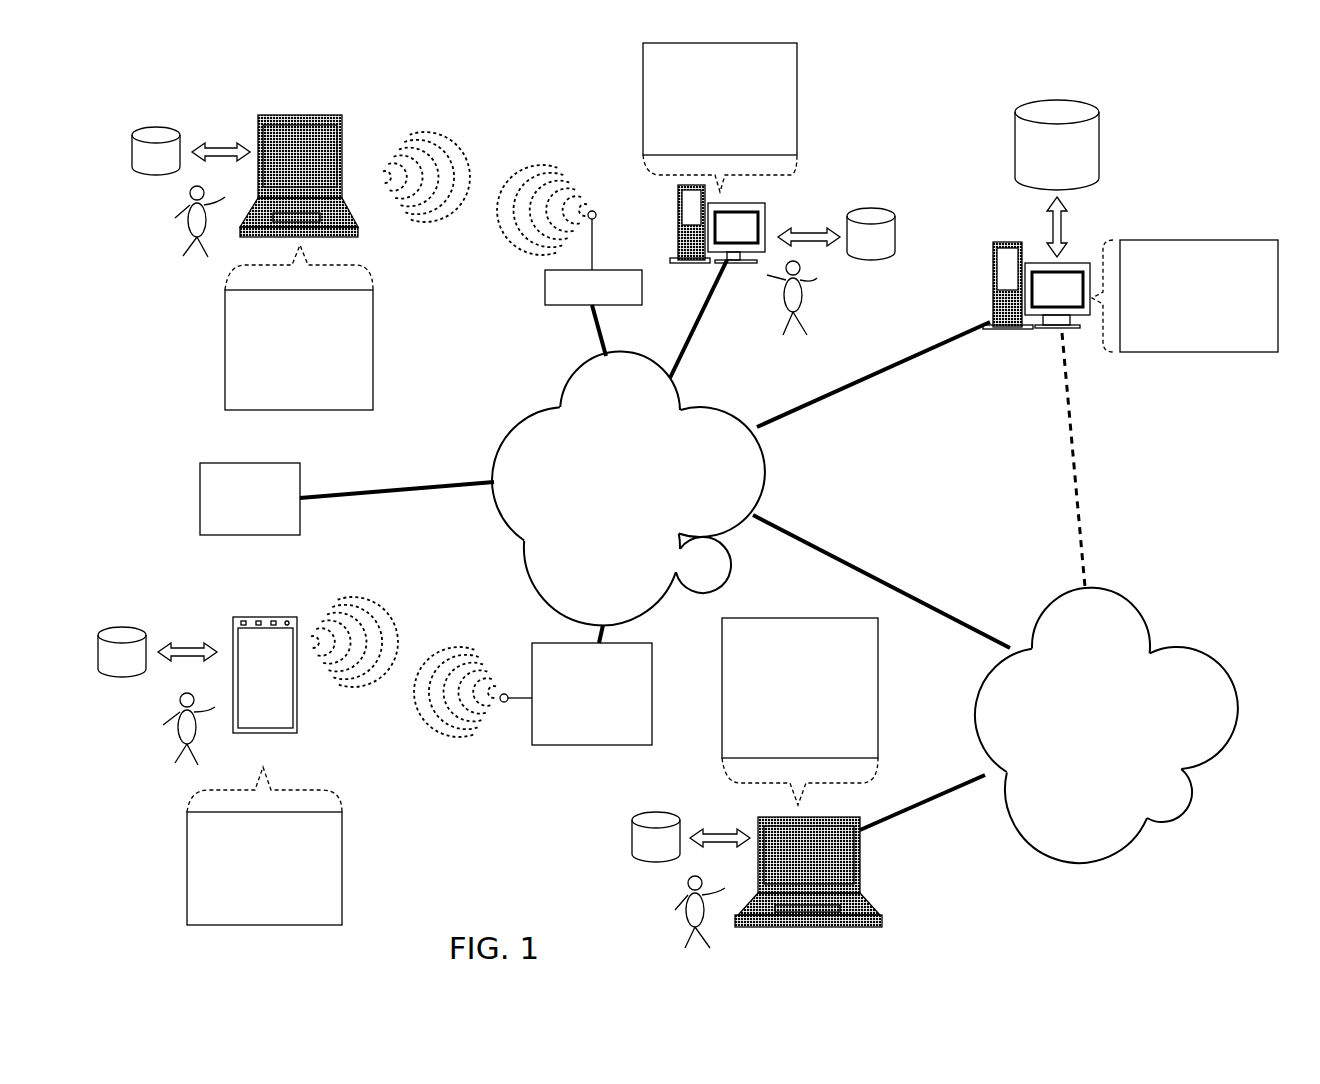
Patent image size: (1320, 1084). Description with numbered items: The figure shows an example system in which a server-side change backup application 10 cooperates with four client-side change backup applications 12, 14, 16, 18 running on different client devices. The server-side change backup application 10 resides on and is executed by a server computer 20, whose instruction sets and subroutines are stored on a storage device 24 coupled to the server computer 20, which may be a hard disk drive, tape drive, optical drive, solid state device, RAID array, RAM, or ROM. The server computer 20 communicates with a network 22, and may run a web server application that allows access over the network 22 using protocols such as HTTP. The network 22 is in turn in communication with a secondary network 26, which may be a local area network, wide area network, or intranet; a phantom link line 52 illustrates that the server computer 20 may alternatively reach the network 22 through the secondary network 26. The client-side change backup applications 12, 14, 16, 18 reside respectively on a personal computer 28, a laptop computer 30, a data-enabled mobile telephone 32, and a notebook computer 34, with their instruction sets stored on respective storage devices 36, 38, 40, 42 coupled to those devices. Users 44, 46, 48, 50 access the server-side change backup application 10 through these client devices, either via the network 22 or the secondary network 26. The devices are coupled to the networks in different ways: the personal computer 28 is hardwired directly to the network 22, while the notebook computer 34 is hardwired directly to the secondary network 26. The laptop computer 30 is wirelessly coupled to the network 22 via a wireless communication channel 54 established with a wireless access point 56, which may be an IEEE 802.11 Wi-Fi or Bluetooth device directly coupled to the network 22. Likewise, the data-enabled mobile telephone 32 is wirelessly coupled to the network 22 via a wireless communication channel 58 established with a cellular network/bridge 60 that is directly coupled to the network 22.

The server-side change backup application 10 is at (1278, 282).
The client-side change backup application 12 is at (798, 127).
The client-side change backup application 14 is at (373, 322).
The client-side change backup application 16 is at (343, 830).
The client-side change backup application 18 is at (878, 718).
The server computer 20 is at (987, 270).
The network 22 is at (628, 488).
The storage device 24 is at (1100, 120).
The secondary network 26 is at (1106, 725).
The personal computer 28 is at (765, 222).
The laptop computer 30 is at (337, 143).
The data-enabled mobile telephone 32 is at (297, 680).
The notebook computer 34 is at (860, 865).
The storage device 36 is at (871, 234).
The storage device 38 is at (156, 151).
The storage device 40 is at (122, 652).
The storage device 42 is at (656, 837).
The user 44 is at (817, 278).
The user 46 is at (162, 210).
The user 48 is at (163, 708).
The user 50 is at (662, 902).
The phantom link line 52 is at (1072, 445).
The wireless communication channel 54 is at (488, 160).
The wireless access point 56 is at (545, 287).
The wireless communication channel 58 is at (415, 643).
The cellular network/bridge 60 is at (652, 660).